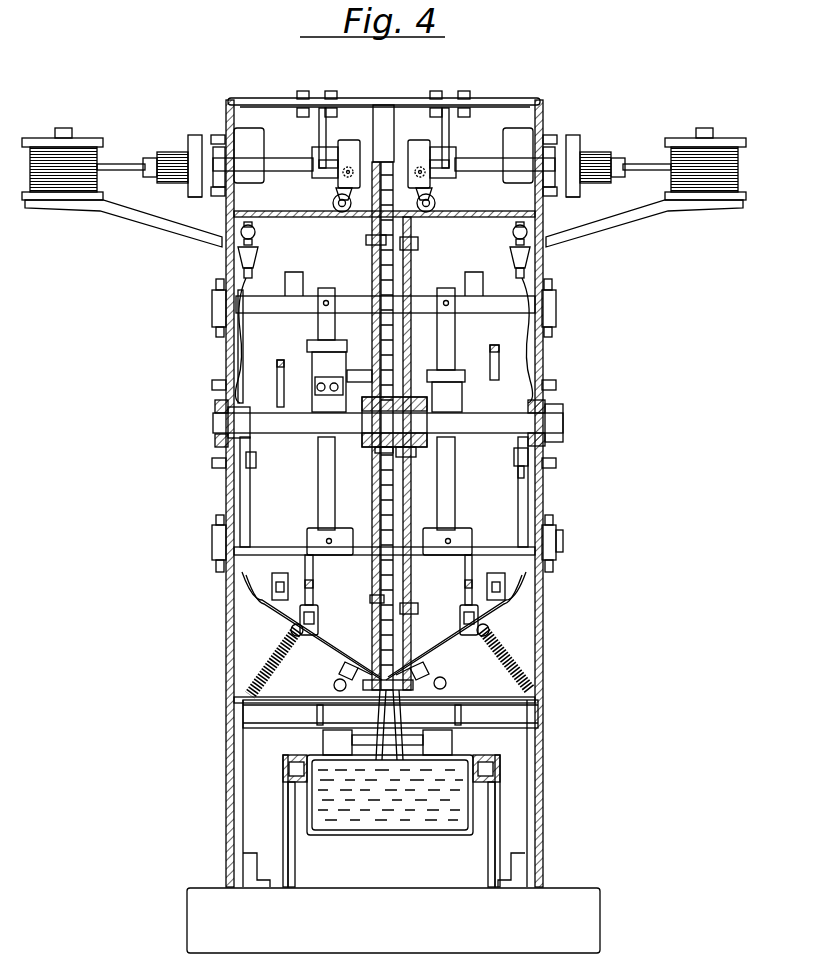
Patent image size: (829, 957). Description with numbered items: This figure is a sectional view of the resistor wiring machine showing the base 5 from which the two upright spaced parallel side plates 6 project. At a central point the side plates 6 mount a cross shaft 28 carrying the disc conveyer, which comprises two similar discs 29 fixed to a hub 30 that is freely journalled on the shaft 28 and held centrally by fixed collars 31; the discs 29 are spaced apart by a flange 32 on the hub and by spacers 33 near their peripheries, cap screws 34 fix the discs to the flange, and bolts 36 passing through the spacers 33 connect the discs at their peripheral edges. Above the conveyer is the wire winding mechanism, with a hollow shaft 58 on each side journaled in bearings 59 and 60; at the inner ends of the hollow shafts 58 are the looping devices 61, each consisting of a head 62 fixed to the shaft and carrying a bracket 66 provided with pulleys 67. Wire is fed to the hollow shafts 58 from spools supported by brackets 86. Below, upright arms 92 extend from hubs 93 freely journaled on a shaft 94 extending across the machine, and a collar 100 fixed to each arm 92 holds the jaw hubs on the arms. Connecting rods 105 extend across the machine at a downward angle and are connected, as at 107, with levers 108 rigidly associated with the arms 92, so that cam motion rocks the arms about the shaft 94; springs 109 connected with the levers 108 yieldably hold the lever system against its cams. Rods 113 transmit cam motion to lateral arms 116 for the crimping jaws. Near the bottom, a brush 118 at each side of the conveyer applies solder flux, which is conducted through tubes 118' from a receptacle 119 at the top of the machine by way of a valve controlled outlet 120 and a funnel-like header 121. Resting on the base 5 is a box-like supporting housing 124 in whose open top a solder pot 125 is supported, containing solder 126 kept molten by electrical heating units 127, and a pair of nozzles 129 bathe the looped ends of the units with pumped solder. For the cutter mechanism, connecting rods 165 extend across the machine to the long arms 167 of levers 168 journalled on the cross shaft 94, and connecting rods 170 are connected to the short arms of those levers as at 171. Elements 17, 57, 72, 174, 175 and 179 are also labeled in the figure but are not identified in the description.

The base 5 is at (568, 898).
The side plates 6 is at (226, 634).
The top frame bar 17 is at (500, 98).
The cross shaft 28 is at (565, 425).
The discs 29 is at (372, 240).
The hub 30 is at (378, 452).
The fixed collars 31 is at (435, 418).
The flange 32 is at (372, 365).
The spacers 33 is at (373, 600).
The cap screws 34 is at (372, 475).
The bolts 36 is at (412, 243).
The central screw 57 is at (410, 130).
The hollow shaft 58 is at (290, 159).
The bearings 59 is at (216, 135).
The bearings 60 is at (347, 155).
The wire looping devices 61 is at (326, 128).
The head 62 is at (322, 170).
The brackets 66 is at (338, 205).
The pulleys 67 is at (350, 210).
The screw head 72 is at (384, 125).
The brackets 86 is at (160, 218).
The upright arms 92 is at (318, 322).
The hubs 93 is at (312, 530).
The shaft 94 is at (560, 543).
The collar 100 is at (307, 353).
The connecting rods 105 is at (313, 584).
The connection 107 is at (320, 620).
The levers 108 is at (313, 572).
The springs 109 is at (275, 665).
The rods 113 is at (240, 364).
The lateral arms 116 is at (300, 400).
The brush 118 is at (384, 626).
The tubes 118' is at (386, 340).
The receptacle 119 is at (255, 128).
The valve controlled outlet 120 is at (238, 235).
The funnel-like header 121 is at (214, 287).
The supporting housing 124 is at (495, 860).
The solder pot 125 is at (388, 837).
The solder 126 is at (390, 796).
The electrical heating units 127 is at (475, 817).
The nozzles 129 is at (345, 668).
The connecting rods 165 is at (255, 452).
The long arms 167 is at (245, 495).
The levers 168 is at (250, 547).
The connecting rods 170 is at (120, 165).
The connection 171 is at (272, 594).
The motor 174 is at (165, 155).
The disc hub 175 is at (196, 197).
The disc 179 is at (194, 133).